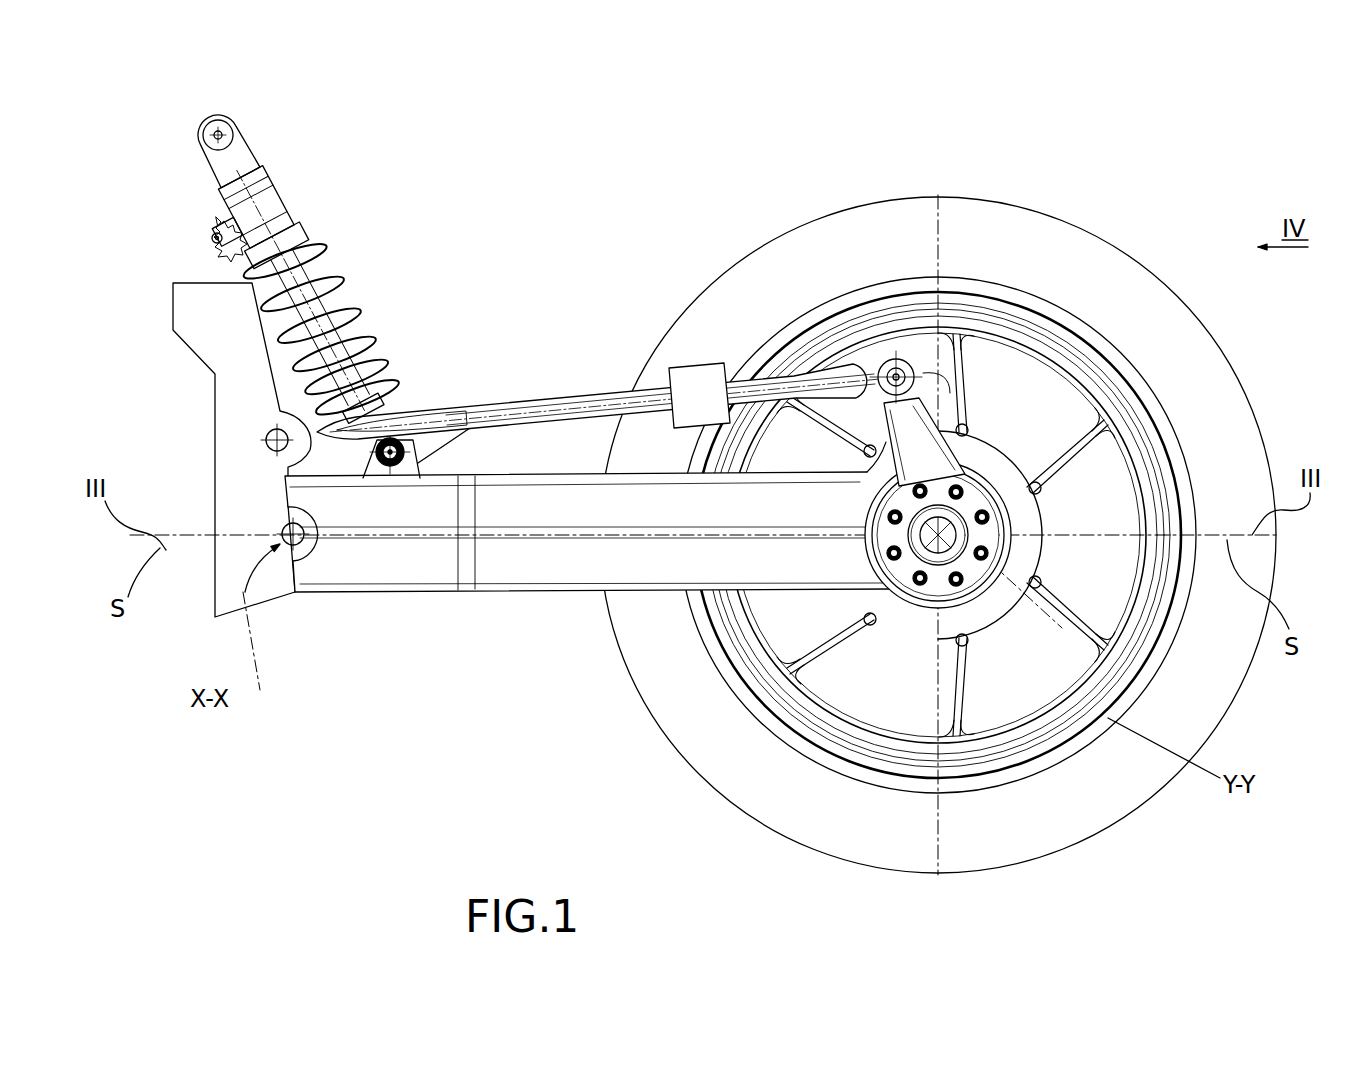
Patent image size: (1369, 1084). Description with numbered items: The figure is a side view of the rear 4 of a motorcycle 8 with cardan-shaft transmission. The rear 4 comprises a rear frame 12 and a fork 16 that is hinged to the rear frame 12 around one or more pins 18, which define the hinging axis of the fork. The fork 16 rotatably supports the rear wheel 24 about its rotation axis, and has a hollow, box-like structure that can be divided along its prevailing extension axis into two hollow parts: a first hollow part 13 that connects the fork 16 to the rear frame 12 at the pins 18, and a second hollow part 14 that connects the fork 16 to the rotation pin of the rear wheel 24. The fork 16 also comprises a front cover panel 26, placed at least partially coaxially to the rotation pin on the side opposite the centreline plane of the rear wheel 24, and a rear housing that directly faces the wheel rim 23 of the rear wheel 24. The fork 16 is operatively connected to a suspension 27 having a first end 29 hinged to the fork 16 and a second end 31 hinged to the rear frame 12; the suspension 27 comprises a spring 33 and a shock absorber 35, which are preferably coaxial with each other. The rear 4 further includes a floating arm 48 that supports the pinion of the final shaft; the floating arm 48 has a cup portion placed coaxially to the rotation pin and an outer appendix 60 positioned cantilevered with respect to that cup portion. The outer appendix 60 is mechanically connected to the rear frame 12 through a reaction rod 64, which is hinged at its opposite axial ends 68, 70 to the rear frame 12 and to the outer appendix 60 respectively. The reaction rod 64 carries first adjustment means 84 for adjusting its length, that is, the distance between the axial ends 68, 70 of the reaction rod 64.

The rear of a motorcycle 4 is at (627, 178).
The motorcycle 8 is at (390, 187).
The rear frame 12 is at (205, 318).
The first hollow part 13 is at (642, 560).
The second hollow part 14 is at (822, 570).
The fork 16 is at (510, 562).
The pins 18 is at (297, 566).
The wheel rim 23 is at (1050, 730).
The rear wheel 24 is at (1100, 265).
The front cover panel 26 is at (1020, 515).
The suspension 27 is at (393, 290).
The first end 29 is at (406, 438).
The second end 31 is at (228, 128).
The spring 33 is at (347, 285).
The shock absorber 35 is at (330, 320).
The floating arm 48 is at (973, 360).
The outer appendix 60 is at (925, 436).
The reaction rod 64 is at (606, 398).
The axial end 68 is at (268, 436).
The axial end 70 is at (878, 352).
The first adjustment means 84 is at (697, 365).